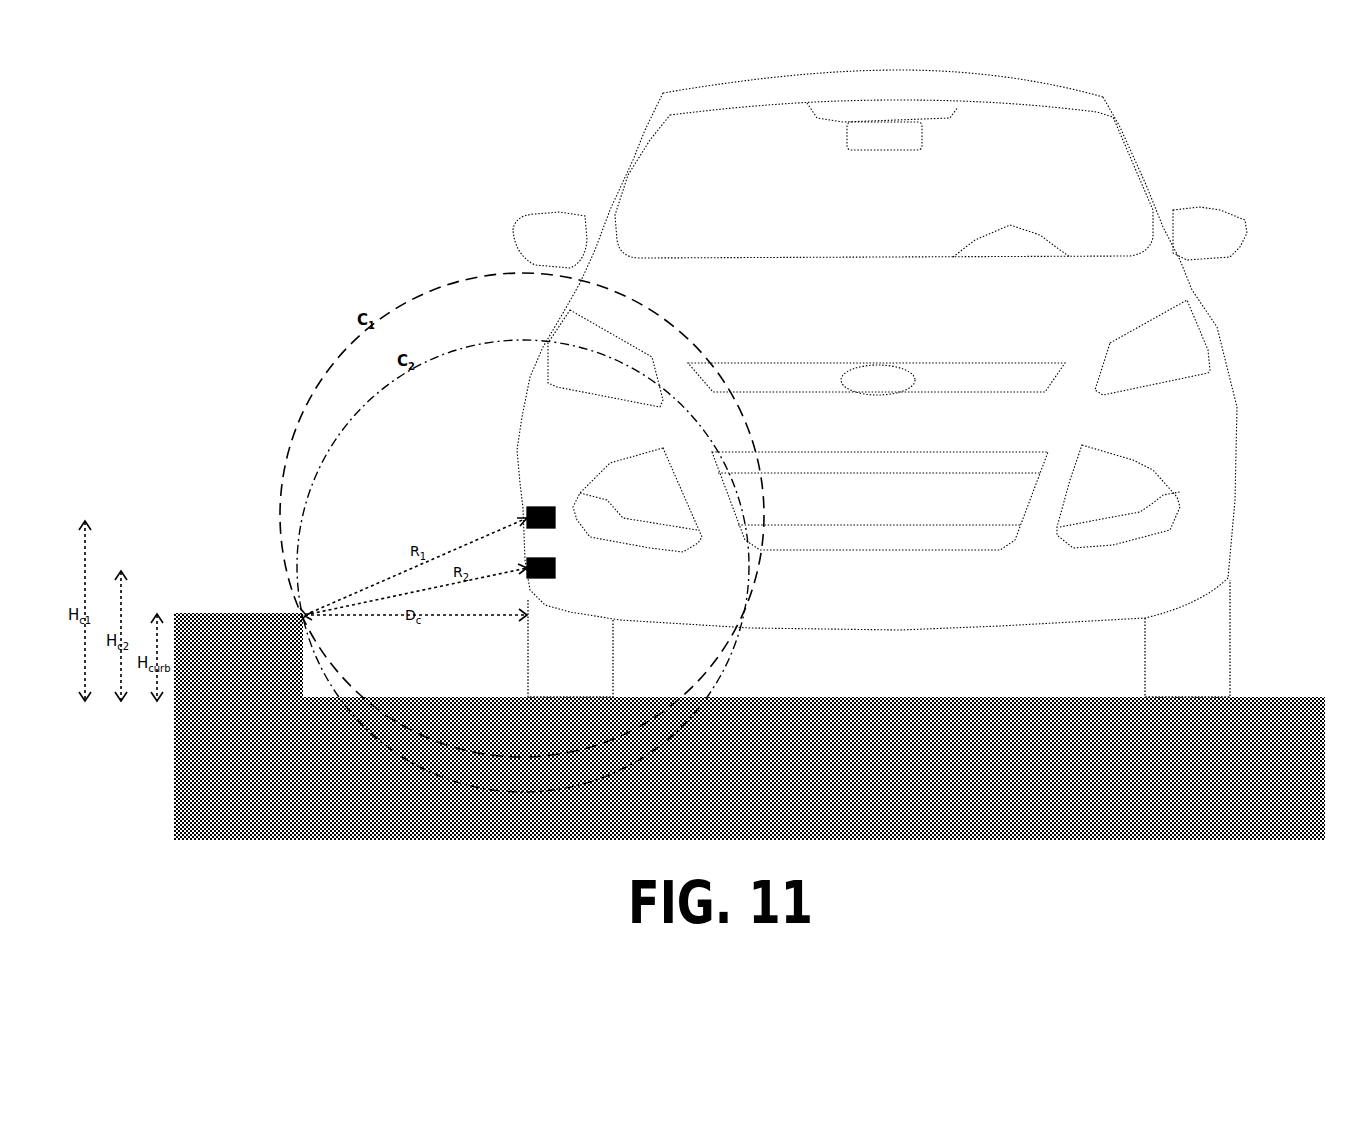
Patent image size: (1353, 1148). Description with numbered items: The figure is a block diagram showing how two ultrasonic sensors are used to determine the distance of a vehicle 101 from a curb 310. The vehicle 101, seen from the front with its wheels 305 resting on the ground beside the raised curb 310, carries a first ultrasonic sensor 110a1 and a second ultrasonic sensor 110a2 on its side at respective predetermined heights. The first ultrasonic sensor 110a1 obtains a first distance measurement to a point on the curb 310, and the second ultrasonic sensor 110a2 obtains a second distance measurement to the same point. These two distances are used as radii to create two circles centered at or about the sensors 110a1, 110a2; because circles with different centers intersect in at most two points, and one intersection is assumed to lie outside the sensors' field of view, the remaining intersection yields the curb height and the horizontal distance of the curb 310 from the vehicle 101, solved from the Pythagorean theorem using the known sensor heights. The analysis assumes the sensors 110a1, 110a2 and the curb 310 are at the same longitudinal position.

The vehicle 101 is at (880, 350).
The first ultrasonic sensor 110a1 is at (541, 505).
The second ultrasonic sensor 110a2 is at (556, 570).
The wheel 305 is at (879, 638).
The curb 310 is at (238, 655).